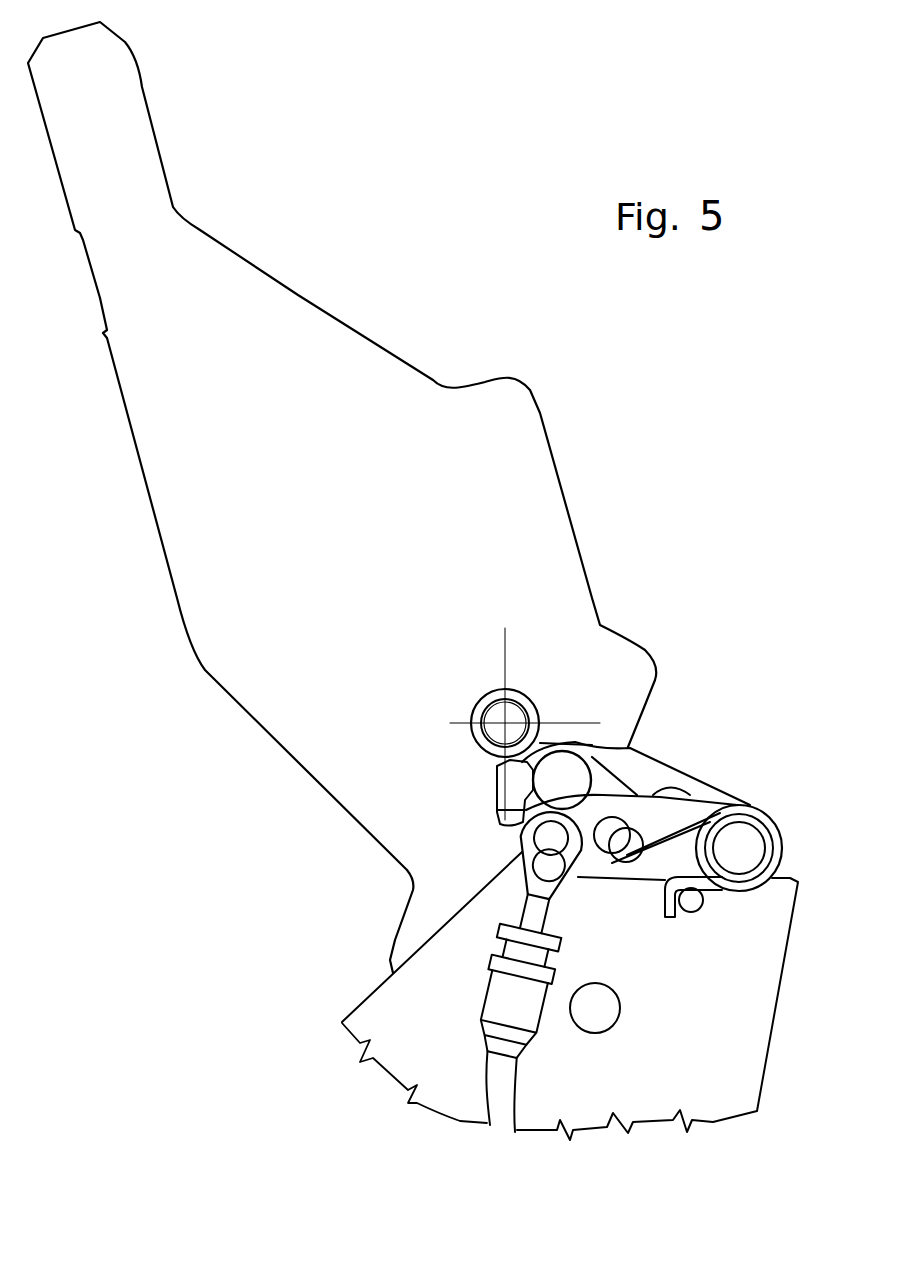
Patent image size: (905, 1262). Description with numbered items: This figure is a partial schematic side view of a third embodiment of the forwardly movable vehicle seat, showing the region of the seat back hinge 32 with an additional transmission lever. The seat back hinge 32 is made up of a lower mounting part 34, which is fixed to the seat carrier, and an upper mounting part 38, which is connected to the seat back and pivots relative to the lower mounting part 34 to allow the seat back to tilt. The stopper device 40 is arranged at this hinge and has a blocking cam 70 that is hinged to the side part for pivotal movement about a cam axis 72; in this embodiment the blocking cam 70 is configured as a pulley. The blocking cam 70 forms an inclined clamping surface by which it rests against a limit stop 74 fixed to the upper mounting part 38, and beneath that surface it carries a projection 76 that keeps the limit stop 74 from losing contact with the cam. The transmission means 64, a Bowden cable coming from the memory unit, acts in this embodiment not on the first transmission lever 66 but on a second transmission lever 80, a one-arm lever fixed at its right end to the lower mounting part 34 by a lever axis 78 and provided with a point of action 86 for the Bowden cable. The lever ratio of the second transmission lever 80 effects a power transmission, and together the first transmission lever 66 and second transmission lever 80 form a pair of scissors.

The seat back hinge 32 is at (378, 1028).
The lower mounting part 34 is at (440, 1090).
The upper mounting part 38 is at (217, 463).
The stopper device 40 is at (715, 634).
The transmission means 64 is at (355, 970).
The first transmission lever 66 is at (590, 757).
The blocking cam 70 is at (642, 654).
The cam axis 72 is at (370, 628).
The limit stop 74 is at (493, 713).
The projection 76 is at (518, 770).
The lever axis 78 is at (738, 840).
The second transmission lever 80 is at (652, 870).
The point of action 86 is at (558, 842).